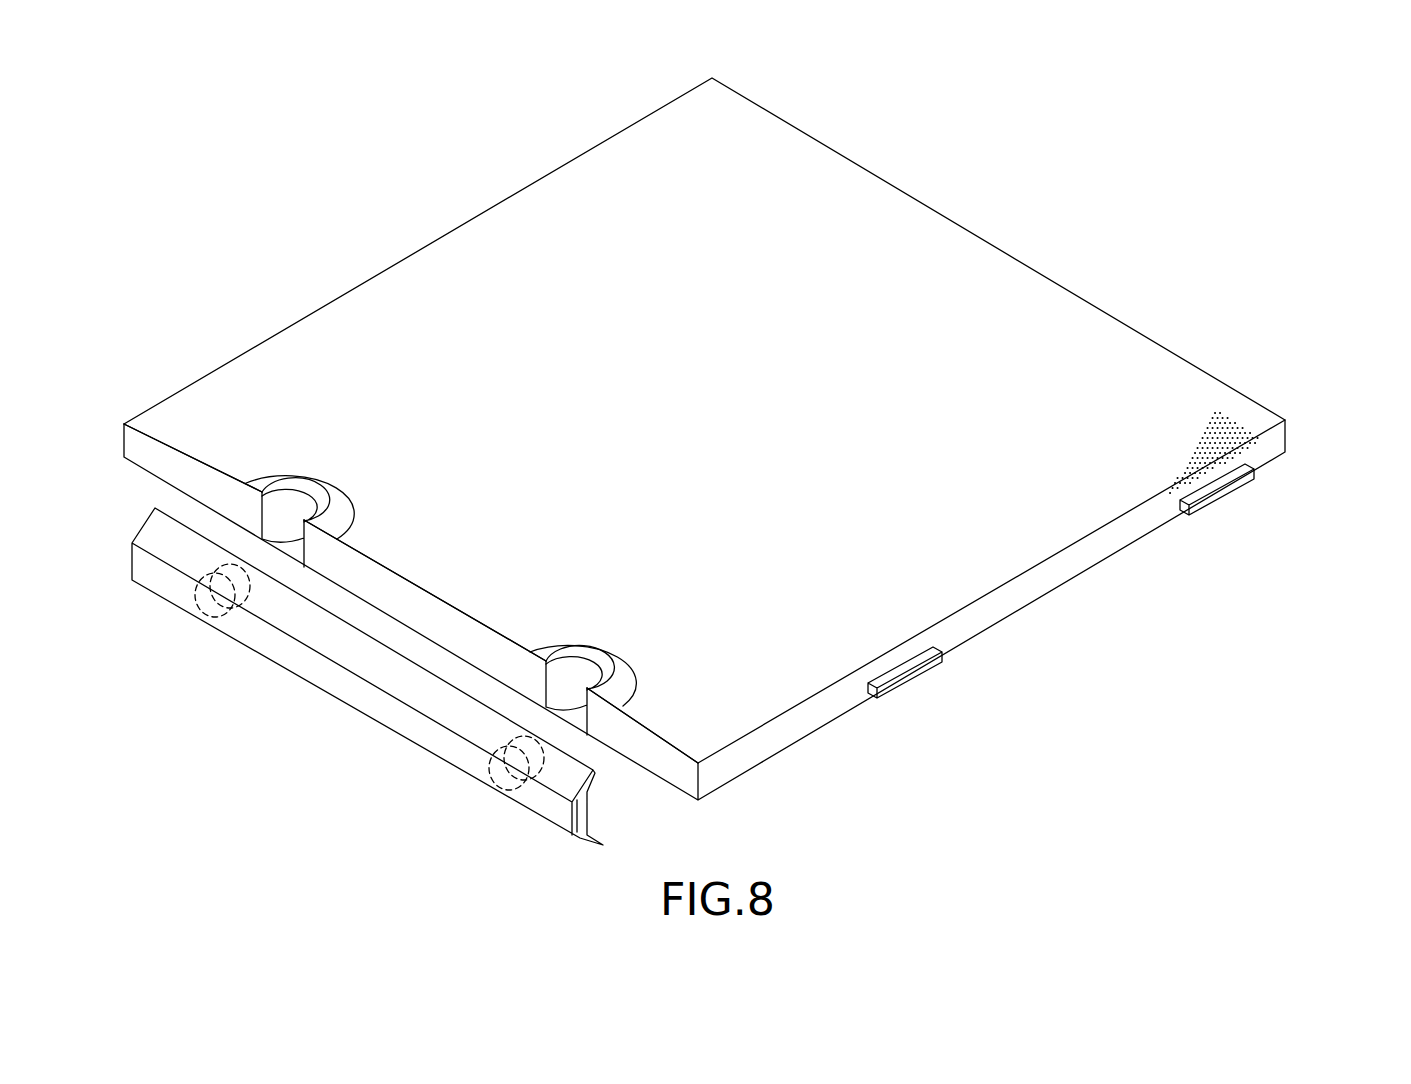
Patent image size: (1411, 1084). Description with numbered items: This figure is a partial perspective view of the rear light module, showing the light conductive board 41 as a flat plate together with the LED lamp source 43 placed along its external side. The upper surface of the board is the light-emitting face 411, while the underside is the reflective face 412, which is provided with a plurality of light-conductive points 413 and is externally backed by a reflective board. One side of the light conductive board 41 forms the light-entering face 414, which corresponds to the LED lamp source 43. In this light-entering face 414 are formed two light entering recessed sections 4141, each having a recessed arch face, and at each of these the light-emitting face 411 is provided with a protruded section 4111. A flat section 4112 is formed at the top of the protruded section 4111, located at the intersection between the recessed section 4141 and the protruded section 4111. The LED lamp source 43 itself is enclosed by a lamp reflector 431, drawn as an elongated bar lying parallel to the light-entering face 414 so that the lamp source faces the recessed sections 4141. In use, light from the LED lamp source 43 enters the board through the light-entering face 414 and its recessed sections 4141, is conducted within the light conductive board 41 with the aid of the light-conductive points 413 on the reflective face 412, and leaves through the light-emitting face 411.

The light conductive board 41 is at (395, 243).
The light-emitting face 411 is at (345, 318).
The protruded section 4111 is at (277, 482).
The flat section 4112 is at (258, 487).
The reflective face 412 is at (1168, 523).
The light-conductive points 413 is at (1272, 410).
The light-entering face 414 is at (157, 458).
The light entering recessed section 4141 is at (273, 507).
The LED lamp source 43 is at (203, 600).
The lamp reflector 431 is at (146, 534).